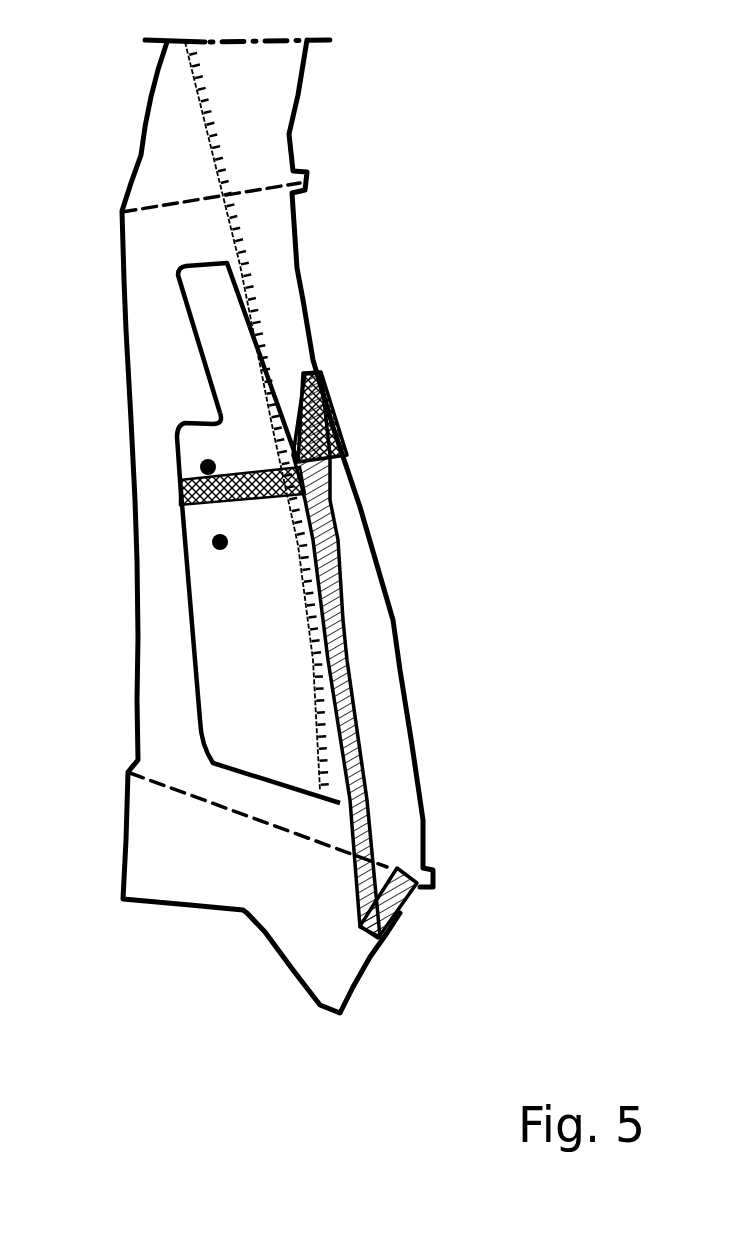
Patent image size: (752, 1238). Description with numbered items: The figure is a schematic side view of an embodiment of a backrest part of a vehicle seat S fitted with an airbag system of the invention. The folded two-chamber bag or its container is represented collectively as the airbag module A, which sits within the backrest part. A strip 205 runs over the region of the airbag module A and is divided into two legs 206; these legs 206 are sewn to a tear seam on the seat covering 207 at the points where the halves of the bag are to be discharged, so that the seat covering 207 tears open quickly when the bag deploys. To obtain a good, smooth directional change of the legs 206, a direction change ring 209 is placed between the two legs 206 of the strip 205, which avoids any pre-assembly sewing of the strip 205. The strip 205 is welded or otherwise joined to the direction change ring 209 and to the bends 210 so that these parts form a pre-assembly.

The strip 205 is at (318, 578).
The legs 206 is at (322, 457).
The seat covering 207 is at (313, 322).
The direction change ring 209 is at (328, 500).
The bends 210 is at (337, 413).
The airbag module A is at (240, 668).
The seat S is at (220, 867).